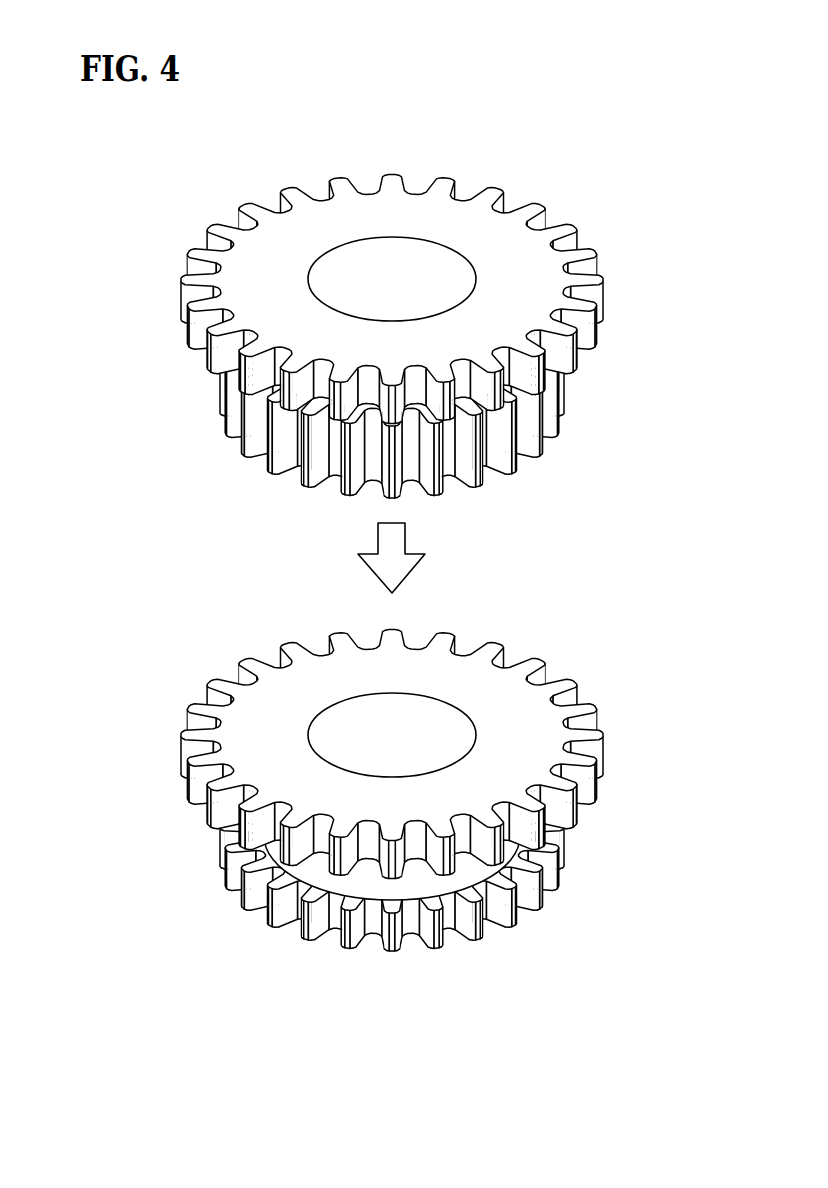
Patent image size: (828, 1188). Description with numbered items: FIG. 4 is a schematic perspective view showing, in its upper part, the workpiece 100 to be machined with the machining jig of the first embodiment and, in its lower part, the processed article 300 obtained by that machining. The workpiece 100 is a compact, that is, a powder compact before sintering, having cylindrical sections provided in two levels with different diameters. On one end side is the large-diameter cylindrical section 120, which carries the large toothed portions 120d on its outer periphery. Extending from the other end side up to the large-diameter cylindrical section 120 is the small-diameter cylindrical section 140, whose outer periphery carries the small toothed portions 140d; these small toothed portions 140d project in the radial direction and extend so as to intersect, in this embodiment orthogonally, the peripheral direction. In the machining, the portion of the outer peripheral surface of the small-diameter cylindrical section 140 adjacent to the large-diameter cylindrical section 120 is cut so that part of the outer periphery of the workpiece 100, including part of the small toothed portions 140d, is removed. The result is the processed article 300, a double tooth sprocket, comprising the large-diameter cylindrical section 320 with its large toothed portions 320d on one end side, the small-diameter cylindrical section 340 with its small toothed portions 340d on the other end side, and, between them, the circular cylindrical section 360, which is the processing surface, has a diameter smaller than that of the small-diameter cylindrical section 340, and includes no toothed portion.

The workpiece 100 is at (368, 330).
The large-diameter cylindrical section 120 is at (322, 290).
The large toothed portions 120d is at (178, 328).
The small-diameter cylindrical section 140 is at (303, 402).
The small toothed portions 140d is at (240, 421).
The processed article 300 is at (370, 796).
The large-diameter cylindrical section 320 is at (322, 748).
The large toothed portions 320d is at (182, 782).
The small-diameter cylindrical section 340 is at (303, 867).
The small toothed portions 340d is at (236, 893).
The circular cylindrical section 360 is at (470, 872).